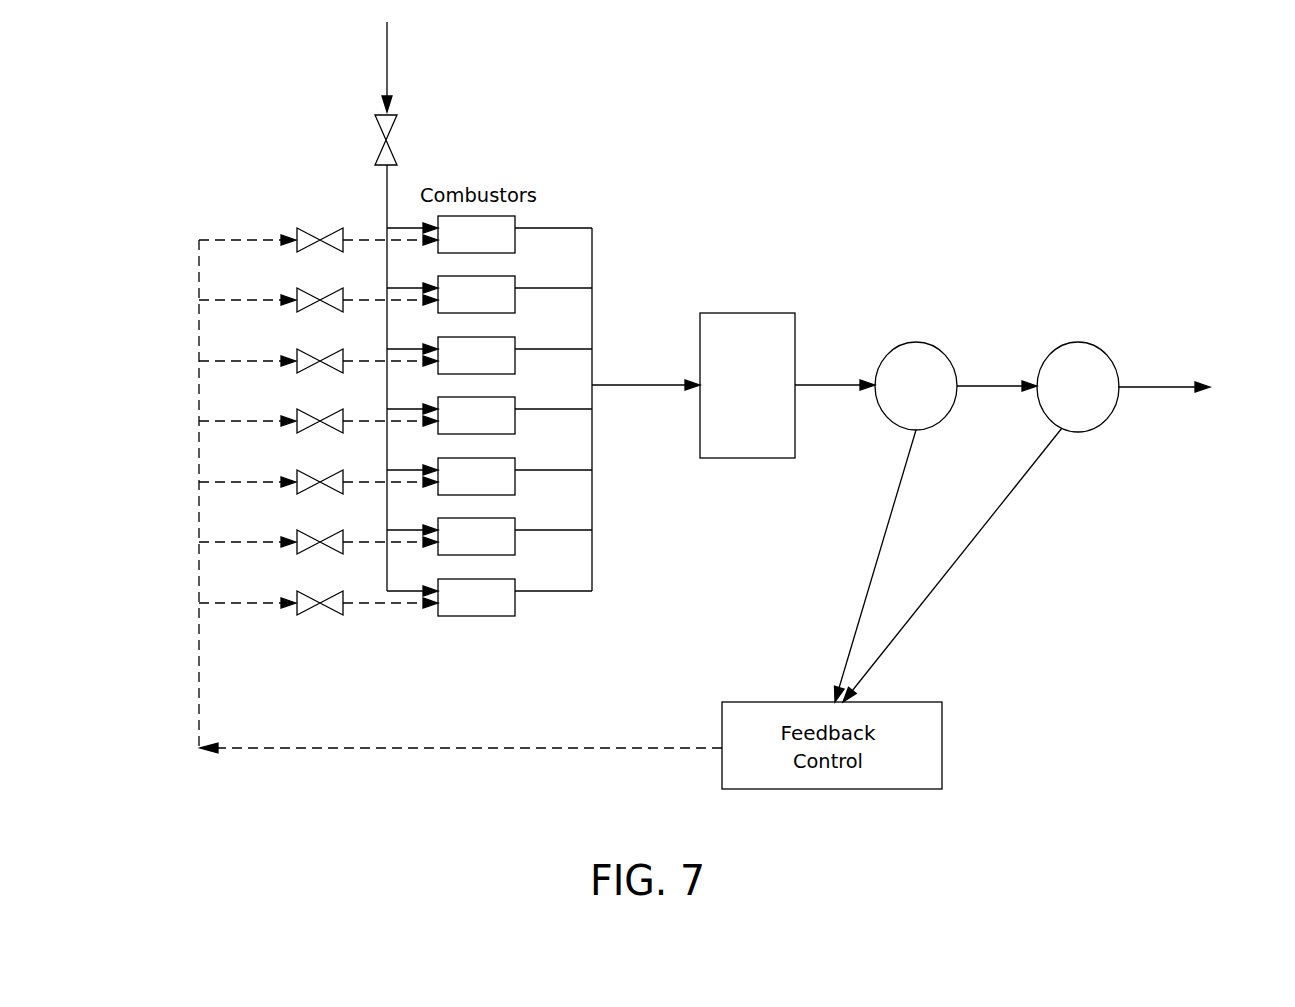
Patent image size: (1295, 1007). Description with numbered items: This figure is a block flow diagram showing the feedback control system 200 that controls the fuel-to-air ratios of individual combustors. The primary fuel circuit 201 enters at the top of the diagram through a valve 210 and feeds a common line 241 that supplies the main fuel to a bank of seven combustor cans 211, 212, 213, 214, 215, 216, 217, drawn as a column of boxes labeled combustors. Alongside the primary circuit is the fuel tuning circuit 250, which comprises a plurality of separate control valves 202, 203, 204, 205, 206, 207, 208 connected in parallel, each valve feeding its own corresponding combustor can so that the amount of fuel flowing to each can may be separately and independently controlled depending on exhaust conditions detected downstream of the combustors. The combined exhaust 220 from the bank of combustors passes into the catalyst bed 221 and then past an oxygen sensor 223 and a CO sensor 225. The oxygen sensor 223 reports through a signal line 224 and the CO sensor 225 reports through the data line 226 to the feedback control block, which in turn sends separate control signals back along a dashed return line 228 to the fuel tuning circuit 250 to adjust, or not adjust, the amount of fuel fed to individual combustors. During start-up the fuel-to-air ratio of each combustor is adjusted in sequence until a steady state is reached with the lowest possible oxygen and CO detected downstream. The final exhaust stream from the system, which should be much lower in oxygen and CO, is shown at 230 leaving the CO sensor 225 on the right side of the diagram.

The feedback control system 200 is at (762, 114).
The primary fuel circuit 201 is at (286, 81).
The control valve 202 is at (312, 230).
The control valve 203 is at (308, 292).
The control valve 204 is at (308, 353).
The control valve 205 is at (308, 413).
The control valve 206 is at (308, 474).
The control valve 207 is at (308, 534).
The control valve 208 is at (308, 595).
The primary fuel control valve 210 is at (397, 125).
The combustor can 211 is at (516, 246).
The combustor can 212 is at (516, 306).
The combustor can 213 is at (516, 367).
The combustor can 214 is at (516, 427).
The combustor can 215 is at (516, 488).
The combustor can 216 is at (516, 548).
The combustor can 217 is at (516, 609).
The combined exhaust 220 is at (643, 391).
The catalyst bed 221 is at (732, 313).
The oxygen sensor 223 is at (943, 352).
The O2 sensor signal line 224 is at (890, 520).
The CO sensor 225 is at (1103, 352).
The data line 226 is at (927, 597).
The feedback control signal line 228 is at (423, 749).
The final exhaust stream 230 is at (1185, 388).
The primary fuel manifold line 241 is at (384, 200).
The fuel tuning circuit 250 is at (304, 494).